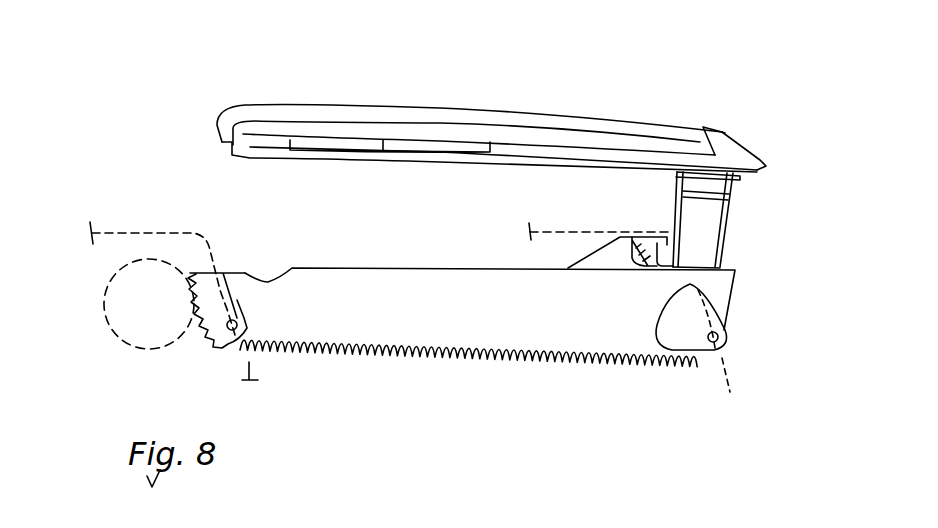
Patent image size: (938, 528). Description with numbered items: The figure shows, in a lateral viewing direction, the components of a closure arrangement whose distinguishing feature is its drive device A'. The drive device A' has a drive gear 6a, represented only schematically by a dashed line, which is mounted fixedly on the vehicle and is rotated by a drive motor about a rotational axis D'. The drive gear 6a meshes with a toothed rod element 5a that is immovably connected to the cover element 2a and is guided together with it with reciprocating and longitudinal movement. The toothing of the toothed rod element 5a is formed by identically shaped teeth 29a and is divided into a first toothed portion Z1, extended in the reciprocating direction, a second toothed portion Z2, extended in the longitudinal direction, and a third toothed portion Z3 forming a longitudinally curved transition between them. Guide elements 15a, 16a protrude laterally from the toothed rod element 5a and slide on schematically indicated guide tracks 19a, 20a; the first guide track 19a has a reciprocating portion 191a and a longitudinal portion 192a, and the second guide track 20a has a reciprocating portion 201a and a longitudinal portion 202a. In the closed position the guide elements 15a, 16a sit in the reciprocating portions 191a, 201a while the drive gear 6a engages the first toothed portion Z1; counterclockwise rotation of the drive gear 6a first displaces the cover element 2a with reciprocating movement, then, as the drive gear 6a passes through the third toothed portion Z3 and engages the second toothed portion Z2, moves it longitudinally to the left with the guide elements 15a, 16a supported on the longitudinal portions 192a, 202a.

The cover element 2a is at (437, 112).
The toothed rod element 5a is at (437, 292).
The drive gear 6a is at (132, 346).
The first guide element 15a is at (718, 333).
The second guide element 16a is at (236, 321).
The first guide track 19a is at (587, 210).
The second guide track 20a is at (223, 222).
The teeth 29a is at (548, 367).
The reciprocating portion 191a is at (725, 364).
The longitudinal portion 192a is at (612, 228).
The reciprocating portion 201a is at (253, 367).
The longitudinal portion 202a is at (142, 233).
The rotational axis D' is at (93, 284).
The first toothed portion Z1 is at (176, 320).
The second toothed portion Z2 is at (475, 395).
The third toothed portion Z3 is at (204, 366).
The drive device A' is at (296, 449).